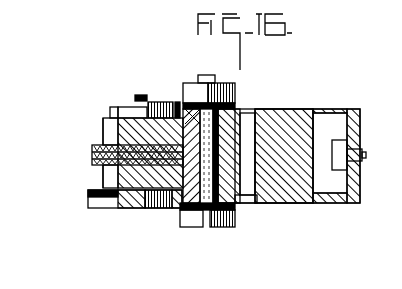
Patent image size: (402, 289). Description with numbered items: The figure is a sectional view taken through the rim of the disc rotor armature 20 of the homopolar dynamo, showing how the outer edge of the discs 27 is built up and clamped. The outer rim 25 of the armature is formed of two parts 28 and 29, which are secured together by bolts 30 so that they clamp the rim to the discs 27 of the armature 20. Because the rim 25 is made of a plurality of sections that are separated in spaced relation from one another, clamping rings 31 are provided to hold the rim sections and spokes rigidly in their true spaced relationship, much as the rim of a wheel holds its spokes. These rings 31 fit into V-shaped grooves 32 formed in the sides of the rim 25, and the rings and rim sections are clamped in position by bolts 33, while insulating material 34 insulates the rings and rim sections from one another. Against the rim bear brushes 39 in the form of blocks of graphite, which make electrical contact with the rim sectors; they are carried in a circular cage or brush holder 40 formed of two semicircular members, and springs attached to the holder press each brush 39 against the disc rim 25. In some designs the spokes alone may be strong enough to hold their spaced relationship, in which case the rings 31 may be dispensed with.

The armature 20 is at (93, 162).
The rim 25 is at (138, 128).
The discs 27 is at (100, 143).
The rim part 28 is at (106, 117).
The rim part 29 is at (122, 187).
The bolts 30 is at (157, 203).
The clamping rings 31 is at (235, 109).
The V-shaped grooves 32 is at (280, 203).
The bolts 33 is at (230, 228).
The insulating material 34 is at (190, 102).
The brushes 39 is at (318, 132).
The brush holder 40 is at (287, 133).